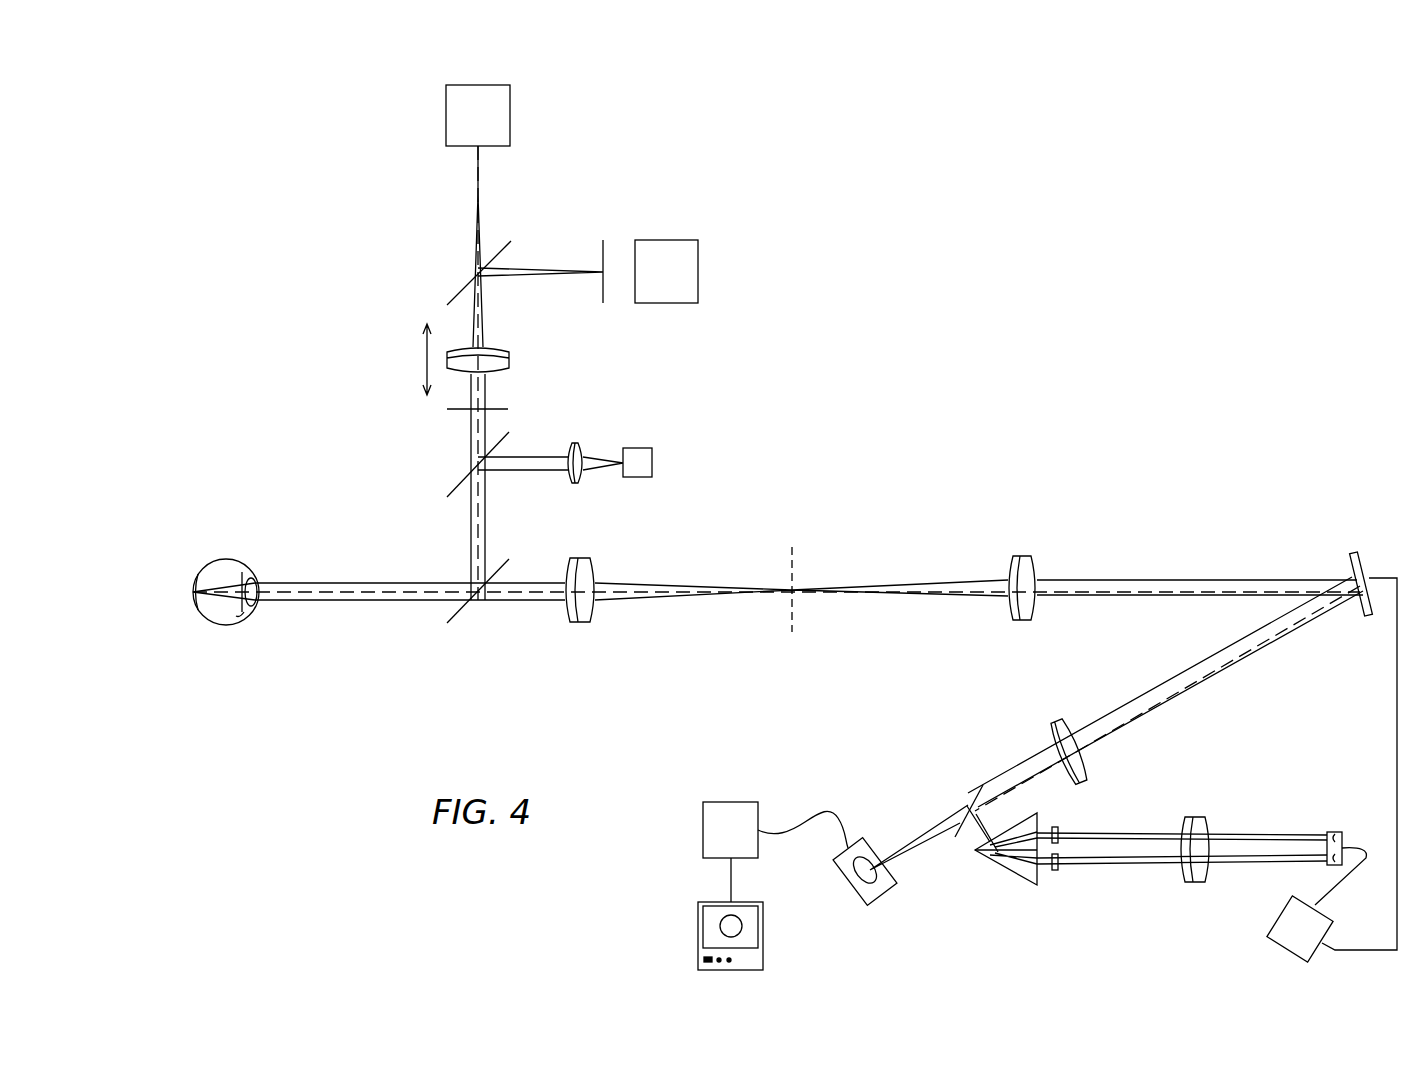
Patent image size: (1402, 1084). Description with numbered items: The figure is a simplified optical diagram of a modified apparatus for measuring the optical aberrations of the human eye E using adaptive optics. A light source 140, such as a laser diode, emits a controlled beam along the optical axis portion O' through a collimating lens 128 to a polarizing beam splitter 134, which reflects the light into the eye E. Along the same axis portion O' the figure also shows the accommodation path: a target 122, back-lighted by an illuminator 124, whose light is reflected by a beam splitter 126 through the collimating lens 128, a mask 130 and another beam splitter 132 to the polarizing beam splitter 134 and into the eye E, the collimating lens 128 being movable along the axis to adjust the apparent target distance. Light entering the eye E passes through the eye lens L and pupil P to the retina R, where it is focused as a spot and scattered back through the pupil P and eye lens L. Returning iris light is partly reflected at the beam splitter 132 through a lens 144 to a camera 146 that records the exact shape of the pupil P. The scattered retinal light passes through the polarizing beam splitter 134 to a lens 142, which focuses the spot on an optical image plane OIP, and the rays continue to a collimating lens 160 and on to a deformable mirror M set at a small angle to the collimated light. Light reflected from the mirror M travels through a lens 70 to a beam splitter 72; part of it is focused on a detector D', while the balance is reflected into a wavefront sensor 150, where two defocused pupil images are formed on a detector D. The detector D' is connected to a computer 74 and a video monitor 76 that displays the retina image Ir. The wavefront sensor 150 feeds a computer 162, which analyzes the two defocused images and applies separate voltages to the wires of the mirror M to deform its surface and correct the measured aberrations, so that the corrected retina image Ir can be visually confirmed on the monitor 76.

The light source 140 is at (510, 112).
The beam splitter 126 is at (503, 247).
The target 122 is at (603, 262).
The illuminator 124 is at (783, 320).
The collimating lens 128 is at (509, 357).
The mask 130 is at (497, 408).
The beam splitter 132 is at (455, 485).
The lens 144 is at (577, 443).
The camera 146 is at (652, 463).
The optical axis portion O' is at (523, 528).
The eye E is at (222, 560).
The eye lens L is at (262, 589).
The retina R is at (205, 603).
The pupil P is at (238, 612).
The polarizing beam splitter 134 is at (465, 607).
The lens 142 is at (578, 623).
The optical image plane OIP is at (793, 612).
The collimating lens 160 is at (1022, 555).
The deformable mirror M is at (1352, 553).
The lens 70 is at (1058, 728).
The beam splitter 72 is at (978, 790).
The detector D' is at (891, 882).
The wavefront sensor 150 is at (1166, 785).
The detector D is at (1341, 833).
The computer 162 is at (1282, 916).
The computer 74 is at (730, 802).
The video monitor 76 is at (765, 935).
The retina image Ir is at (722, 924).